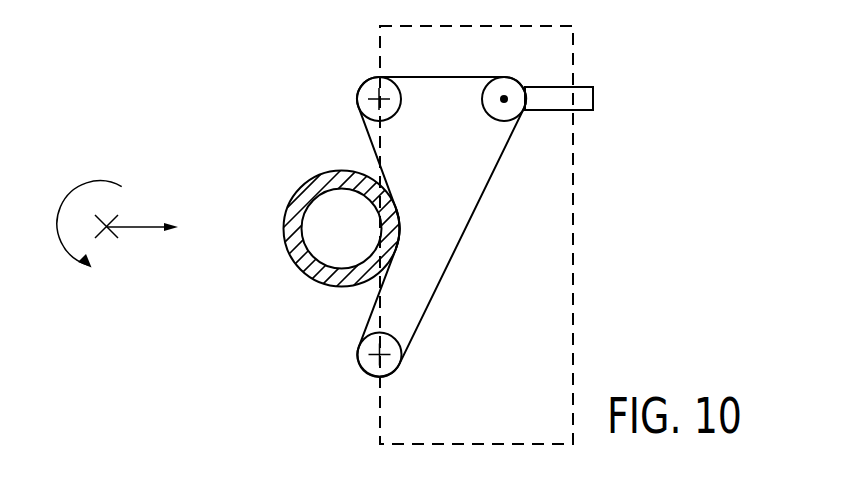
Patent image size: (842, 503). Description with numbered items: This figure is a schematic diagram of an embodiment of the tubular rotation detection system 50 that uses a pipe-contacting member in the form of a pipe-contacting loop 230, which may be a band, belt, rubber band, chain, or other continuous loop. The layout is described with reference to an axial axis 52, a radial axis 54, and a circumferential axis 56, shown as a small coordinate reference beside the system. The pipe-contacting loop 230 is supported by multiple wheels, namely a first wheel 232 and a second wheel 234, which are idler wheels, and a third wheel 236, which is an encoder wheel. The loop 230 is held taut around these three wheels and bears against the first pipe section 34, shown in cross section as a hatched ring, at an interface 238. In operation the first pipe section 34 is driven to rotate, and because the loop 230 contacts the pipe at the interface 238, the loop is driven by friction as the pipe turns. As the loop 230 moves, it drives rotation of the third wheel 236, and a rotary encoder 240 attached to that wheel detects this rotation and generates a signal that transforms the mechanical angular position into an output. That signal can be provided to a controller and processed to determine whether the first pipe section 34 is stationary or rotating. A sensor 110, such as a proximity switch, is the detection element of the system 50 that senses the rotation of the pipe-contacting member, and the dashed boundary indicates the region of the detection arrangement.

The sensor 110 is at (622, 165).
The pipe-contacting loop 230 is at (462, 237).
The first wheel 232 is at (361, 372).
The second wheel 234 is at (364, 84).
The third wheel 236 is at (523, 80).
The interface 238 is at (400, 226).
The rotary encoder 240 is at (583, 110).
The first pipe section 34 is at (299, 192).
The tubular rotation detection system 50 is at (283, 146).
The axial axis 52 is at (102, 238).
The radial axis 54 is at (136, 227).
The circumferential axis 56 is at (68, 204).